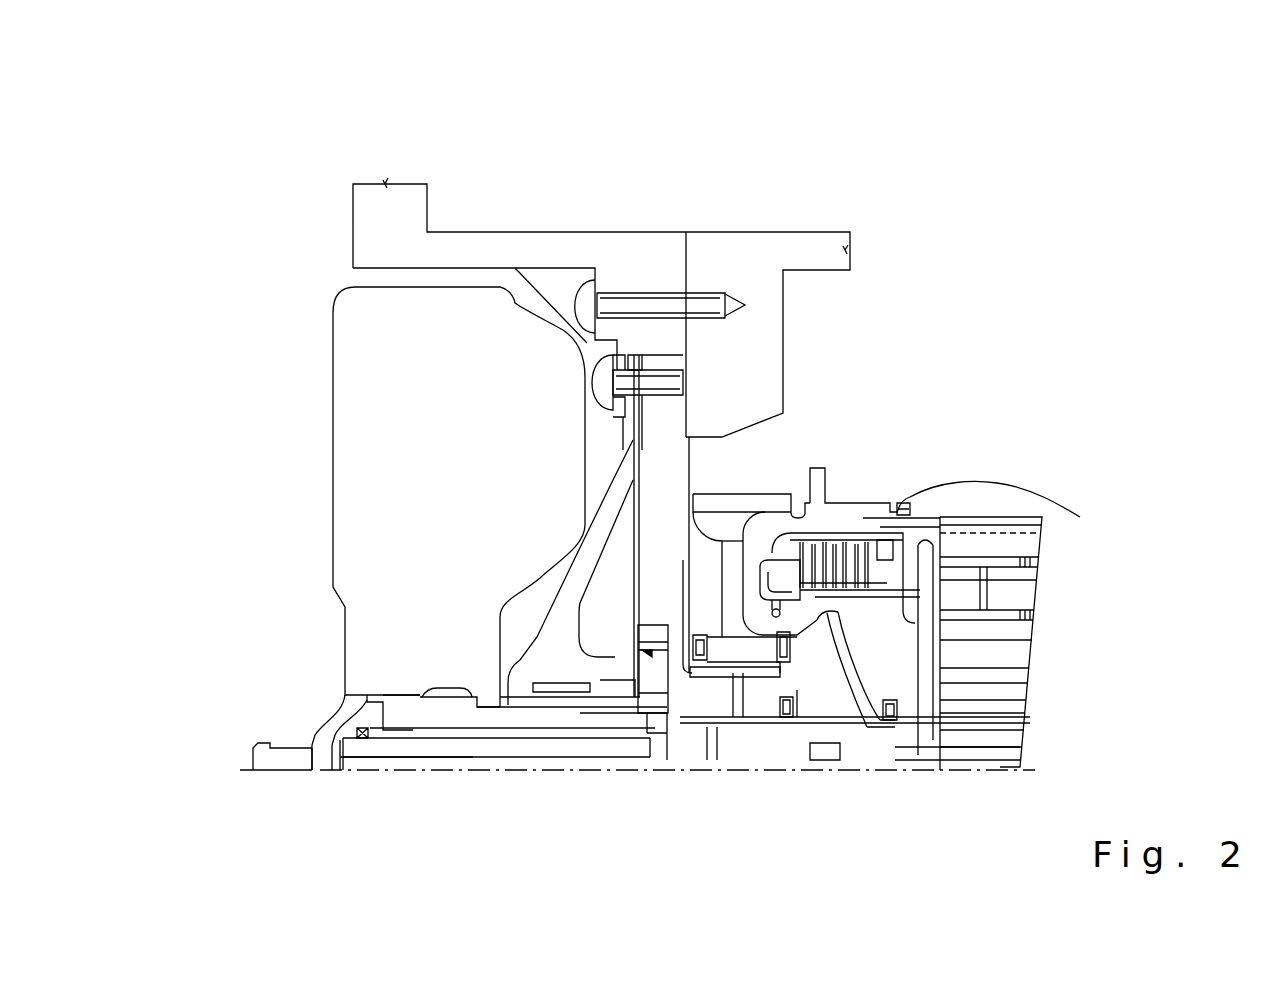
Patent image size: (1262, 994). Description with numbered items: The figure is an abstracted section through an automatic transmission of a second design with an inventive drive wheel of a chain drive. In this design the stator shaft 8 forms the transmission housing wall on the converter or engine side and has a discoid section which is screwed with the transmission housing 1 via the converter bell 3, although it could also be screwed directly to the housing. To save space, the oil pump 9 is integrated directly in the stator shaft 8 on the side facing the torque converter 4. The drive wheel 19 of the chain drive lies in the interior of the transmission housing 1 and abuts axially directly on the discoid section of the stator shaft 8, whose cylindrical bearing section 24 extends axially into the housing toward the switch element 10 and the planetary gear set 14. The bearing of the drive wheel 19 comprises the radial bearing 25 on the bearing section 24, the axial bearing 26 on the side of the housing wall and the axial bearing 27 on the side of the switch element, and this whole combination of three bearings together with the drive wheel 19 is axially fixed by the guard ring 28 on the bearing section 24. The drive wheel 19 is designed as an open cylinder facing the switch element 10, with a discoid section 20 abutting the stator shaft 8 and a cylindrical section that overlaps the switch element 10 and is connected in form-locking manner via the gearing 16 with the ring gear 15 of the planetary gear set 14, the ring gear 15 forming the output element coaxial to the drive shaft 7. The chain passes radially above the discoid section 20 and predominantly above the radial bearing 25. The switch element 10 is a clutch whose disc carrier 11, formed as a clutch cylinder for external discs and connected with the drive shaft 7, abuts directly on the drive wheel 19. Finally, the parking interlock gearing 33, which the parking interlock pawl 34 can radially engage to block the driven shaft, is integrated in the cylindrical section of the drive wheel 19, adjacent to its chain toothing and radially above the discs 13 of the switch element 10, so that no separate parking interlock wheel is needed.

The transmission housing 1 is at (725, 248).
The converter bell 3 is at (507, 247).
The torque converter 4 is at (407, 450).
The drive shaft 7 is at (433, 745).
The stator shaft 8 is at (708, 690).
The oil pump 9 is at (649, 655).
The switch element 10 is at (850, 568).
The disc carrier 11 is at (755, 597).
The discs 13 is at (823, 563).
The planetary gear set 14 is at (996, 634).
The ring gear 15 is at (933, 522).
The gearing 16 is at (902, 498).
The drive wheel 19 is at (730, 530).
The discoid section 20 is at (735, 568).
The bearing section 24 is at (762, 707).
The radial bearing 25 is at (723, 670).
The axial bearing 26 is at (760, 650).
The axial bearing 27 is at (612, 663).
The guard ring 28 is at (802, 688).
The parking interlock gearing 33 is at (817, 473).
The parking interlock pawl 34 is at (825, 497).